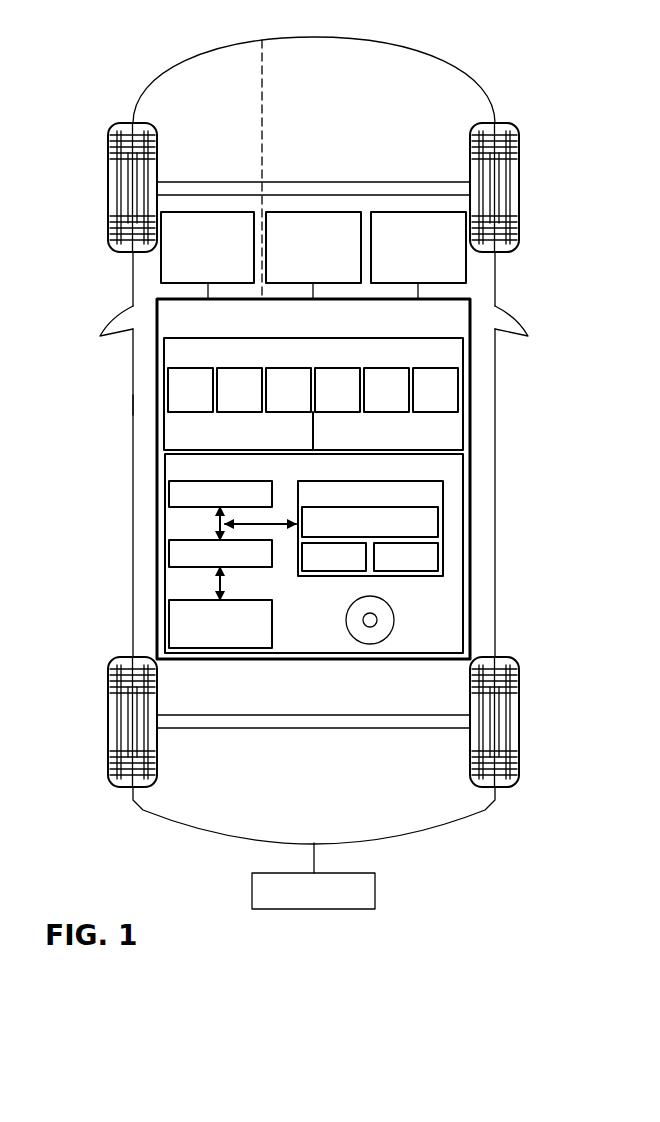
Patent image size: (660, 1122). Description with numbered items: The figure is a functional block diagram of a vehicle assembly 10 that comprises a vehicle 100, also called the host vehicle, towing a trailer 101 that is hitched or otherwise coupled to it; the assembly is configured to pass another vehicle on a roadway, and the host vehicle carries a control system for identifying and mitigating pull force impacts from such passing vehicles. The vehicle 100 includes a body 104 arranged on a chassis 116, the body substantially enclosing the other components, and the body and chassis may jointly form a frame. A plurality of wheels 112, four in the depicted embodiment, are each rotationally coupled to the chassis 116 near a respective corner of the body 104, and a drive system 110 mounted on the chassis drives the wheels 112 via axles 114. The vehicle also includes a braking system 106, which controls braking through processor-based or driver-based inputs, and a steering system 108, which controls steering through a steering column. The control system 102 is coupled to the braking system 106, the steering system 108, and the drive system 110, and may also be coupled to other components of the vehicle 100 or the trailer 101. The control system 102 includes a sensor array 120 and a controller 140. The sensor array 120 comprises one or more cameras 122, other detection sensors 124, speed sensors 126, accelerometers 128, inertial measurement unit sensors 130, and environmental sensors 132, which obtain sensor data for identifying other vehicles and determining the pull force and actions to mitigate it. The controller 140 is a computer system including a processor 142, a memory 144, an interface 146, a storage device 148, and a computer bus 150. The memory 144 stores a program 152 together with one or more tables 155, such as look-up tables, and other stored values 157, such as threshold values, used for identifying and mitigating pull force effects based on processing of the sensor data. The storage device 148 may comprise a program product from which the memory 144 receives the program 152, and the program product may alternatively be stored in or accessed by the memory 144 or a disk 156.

The vehicle assembly 10 is at (578, 55).
The vehicle 100 is at (488, 111).
The trailer 101 is at (368, 892).
The control system 102 is at (472, 313).
The body 104 is at (133, 412).
The braking system 106 is at (158, 262).
The steering system 108 is at (322, 211).
The drive system 110 is at (412, 211).
The wheels 112 is at (107, 192).
The axles 114 is at (190, 189).
The chassis 116 is at (272, 90).
The sensor array 120 is at (465, 355).
The cameras 122 is at (167, 395).
The detection sensors 124 is at (233, 413).
The speed sensors 126 is at (301, 413).
The accelerometers 128 is at (322, 413).
The inertial measurement unit sensors 130 is at (398, 413).
The environmental sensors 132 is at (460, 397).
The controller 140 is at (465, 461).
The processor 142 is at (168, 490).
The memory 144 is at (445, 506).
The interface 146 is at (168, 553).
The storage device 148 is at (220, 649).
The computer bus 150 is at (218, 524).
The program 152 is at (440, 528).
The tables 155 is at (355, 572).
The disk 156 is at (370, 645).
The stored values 157 is at (440, 558).